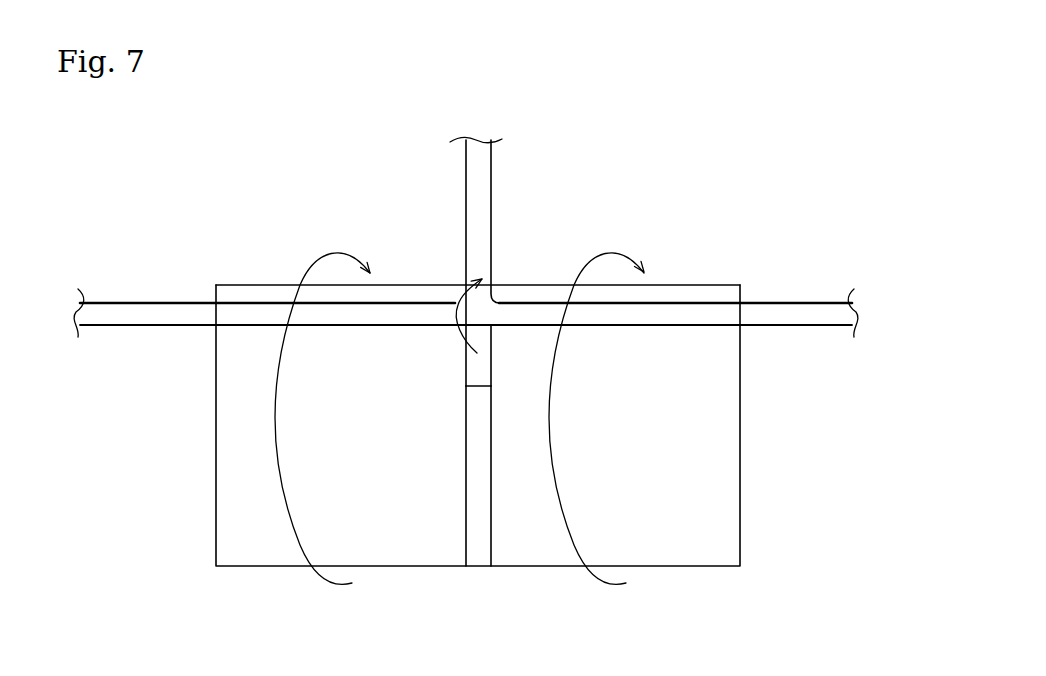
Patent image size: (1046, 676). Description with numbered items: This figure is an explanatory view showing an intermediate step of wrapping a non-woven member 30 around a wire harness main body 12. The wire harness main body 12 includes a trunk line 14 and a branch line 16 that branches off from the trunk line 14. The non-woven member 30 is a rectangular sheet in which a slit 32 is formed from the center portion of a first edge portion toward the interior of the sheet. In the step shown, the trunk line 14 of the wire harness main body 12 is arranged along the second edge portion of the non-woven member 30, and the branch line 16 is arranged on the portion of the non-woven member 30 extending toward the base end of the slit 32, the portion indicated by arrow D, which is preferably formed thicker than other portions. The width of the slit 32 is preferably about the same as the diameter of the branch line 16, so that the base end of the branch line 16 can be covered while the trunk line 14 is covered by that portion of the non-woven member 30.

The wire harness main body 12 is at (800, 284).
The trunk line 14 is at (707, 285).
The branch line 16 is at (493, 186).
The non-woven member 30 is at (746, 387).
The slit 32 is at (490, 447).
The arrow D is at (478, 373).